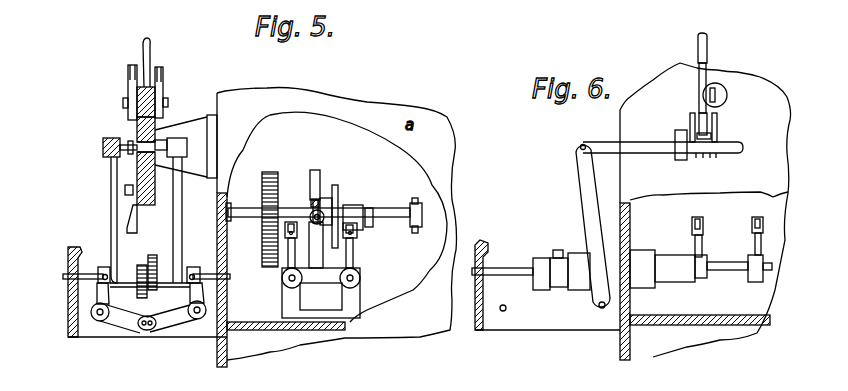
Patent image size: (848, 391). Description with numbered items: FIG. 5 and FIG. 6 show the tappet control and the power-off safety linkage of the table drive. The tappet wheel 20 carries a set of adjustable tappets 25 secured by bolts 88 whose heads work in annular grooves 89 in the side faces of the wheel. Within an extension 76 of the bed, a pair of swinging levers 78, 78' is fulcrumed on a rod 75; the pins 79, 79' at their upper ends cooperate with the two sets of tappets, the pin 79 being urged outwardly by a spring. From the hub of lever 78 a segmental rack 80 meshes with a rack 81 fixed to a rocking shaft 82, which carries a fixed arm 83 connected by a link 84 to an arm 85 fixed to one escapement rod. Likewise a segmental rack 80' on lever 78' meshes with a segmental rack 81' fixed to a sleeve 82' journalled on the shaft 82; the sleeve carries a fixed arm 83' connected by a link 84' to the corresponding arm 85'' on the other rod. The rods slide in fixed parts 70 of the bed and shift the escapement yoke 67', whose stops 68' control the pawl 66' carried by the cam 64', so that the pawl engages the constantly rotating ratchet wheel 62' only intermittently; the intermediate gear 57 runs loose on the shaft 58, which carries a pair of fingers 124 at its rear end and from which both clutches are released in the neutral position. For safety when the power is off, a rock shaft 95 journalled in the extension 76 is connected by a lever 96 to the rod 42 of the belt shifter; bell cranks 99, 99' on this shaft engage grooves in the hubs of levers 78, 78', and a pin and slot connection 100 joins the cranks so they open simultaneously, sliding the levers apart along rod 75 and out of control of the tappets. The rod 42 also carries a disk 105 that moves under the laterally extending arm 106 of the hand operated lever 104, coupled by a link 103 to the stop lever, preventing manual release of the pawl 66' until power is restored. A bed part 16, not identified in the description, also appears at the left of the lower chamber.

In FIG. 5, the annular grooves 89 is at (141, 55).
In FIG. 5, the tappets 25 is at (132, 77).
In FIG. 5, the bolts 88 is at (125, 100).
In FIG. 5, the pin 79 is at (112, 130).
In FIG. 5, the tappet wheel 20 is at (163, 112).
In FIG. 5, the pin 79' is at (174, 126).
In FIG. 5, the swinging lever 78 is at (97, 220).
In FIG. 5, the swinging lever 78' is at (160, 222).
In FIG. 5, the segmental rack 80 is at (135, 270).
In FIG. 5, the segmental rack 80' is at (160, 264).
In FIG. 5, the rod 75 is at (65, 277).
In FIG. 5, the extension of the bed 76 is at (70, 308).
In FIG. 5, the bell crank 99 is at (119, 323).
In FIG. 5, the pin and slot connection 100 is at (147, 331).
In FIG. 5, the bell crank 99' is at (175, 322).
In FIG. 5, the rock shaft 95 is at (198, 320).
In FIG. 6, the rock shaft 95 is at (602, 315).
In FIG. 5, the intermediate gear 57 is at (268, 167).
In FIG. 5, the pin 62' is at (301, 181).
In FIG. 5, the pawl 66' is at (328, 180).
In FIG. 5, the stops 68' is at (337, 204).
In FIG. 5, the cam 64' is at (359, 202).
In FIG. 5, the shaft 58 is at (392, 212).
In FIG. 5, the fingers 124 is at (418, 203).
In FIG. 5, the arm 85 is at (358, 255).
In FIG. 5, the connecting rod 85'' is at (276, 257).
In FIG. 5, the fixed parts of the bed 70 is at (347, 308).
In FIG. 5, the escapement yoke 67' is at (321, 293).
In FIG. 6, the hand operated lever 104 is at (708, 50).
In FIG. 6, the link 103 is at (727, 95).
In FIG. 6, the abutment or disk 105 is at (678, 132).
In FIG. 6, the laterally extending arm 106 is at (708, 127).
In FIG. 6, the rod 42 is at (660, 153).
In FIG. 6, the lever 96 is at (582, 200).
In FIG. 6, the link 84 is at (760, 194).
In FIG. 6, the link 84' is at (683, 230).
In FIG. 6, the fixed arm 83 is at (749, 242).
In FIG. 6, the fixed arm 83' is at (716, 245).
In FIG. 6, the rocking shaft 82 is at (502, 258).
In FIG. 6, the sleeve 82' is at (689, 278).
In FIG. 6, the rack 81 is at (534, 287).
In FIG. 6, the segmental rack 81' is at (560, 283).
In FIG. 6, the wall post 16 is at (478, 303).